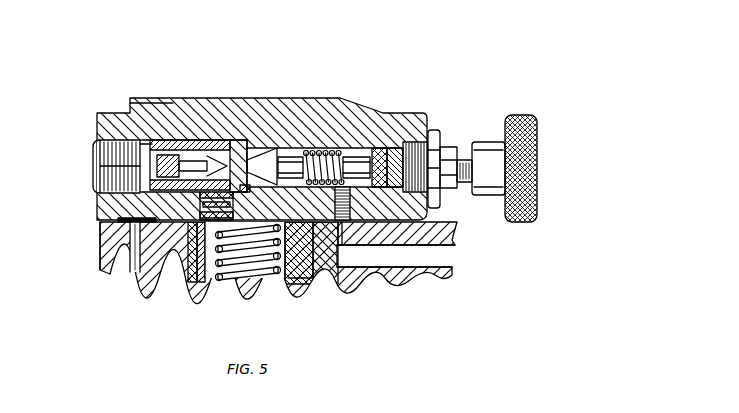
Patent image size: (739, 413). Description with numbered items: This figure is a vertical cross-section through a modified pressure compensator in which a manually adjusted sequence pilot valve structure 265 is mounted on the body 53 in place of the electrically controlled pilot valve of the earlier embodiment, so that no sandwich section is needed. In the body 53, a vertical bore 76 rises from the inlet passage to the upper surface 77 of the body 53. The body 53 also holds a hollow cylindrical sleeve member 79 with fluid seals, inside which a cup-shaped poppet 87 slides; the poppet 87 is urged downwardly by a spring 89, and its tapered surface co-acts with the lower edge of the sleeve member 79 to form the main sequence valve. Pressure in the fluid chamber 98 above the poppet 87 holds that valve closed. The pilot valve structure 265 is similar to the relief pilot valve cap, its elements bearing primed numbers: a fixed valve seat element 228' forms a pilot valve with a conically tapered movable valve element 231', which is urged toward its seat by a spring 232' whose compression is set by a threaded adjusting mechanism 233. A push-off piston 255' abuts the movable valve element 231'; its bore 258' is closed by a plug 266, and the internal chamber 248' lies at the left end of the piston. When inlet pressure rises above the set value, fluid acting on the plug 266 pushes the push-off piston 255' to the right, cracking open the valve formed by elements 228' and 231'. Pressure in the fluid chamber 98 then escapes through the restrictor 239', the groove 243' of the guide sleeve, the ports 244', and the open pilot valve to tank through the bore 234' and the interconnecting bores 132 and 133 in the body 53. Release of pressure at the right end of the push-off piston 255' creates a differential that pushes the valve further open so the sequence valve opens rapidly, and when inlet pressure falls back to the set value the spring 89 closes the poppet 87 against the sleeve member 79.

The sequence pilot valve structure 265 is at (126, 79).
The plug 266 is at (145, 143).
The bore through push-off piston 258' is at (192, 123).
The fixed valve seat element 228' is at (240, 130).
The push-off piston 255' is at (190, 149).
The spring 232' is at (324, 127).
The threaded adjusting mechanism 233 is at (479, 131).
The internal chamber 248' is at (100, 166).
The movable valve element 231' is at (265, 166).
The groove 243' is at (196, 200).
The ports 244' is at (265, 195).
The fluid chamber 98 is at (292, 232).
The bore 234' is at (379, 181).
The bore 132 is at (343, 233).
The bore 133 is at (398, 256).
The upper surface 77 is at (105, 224).
The restrictor 239' is at (191, 219).
The vertical bore 76 is at (137, 262).
The poppet 87 is at (207, 275).
The spring 89 is at (250, 262).
The sleeve member 79 is at (302, 280).
The body 53 is at (357, 285).